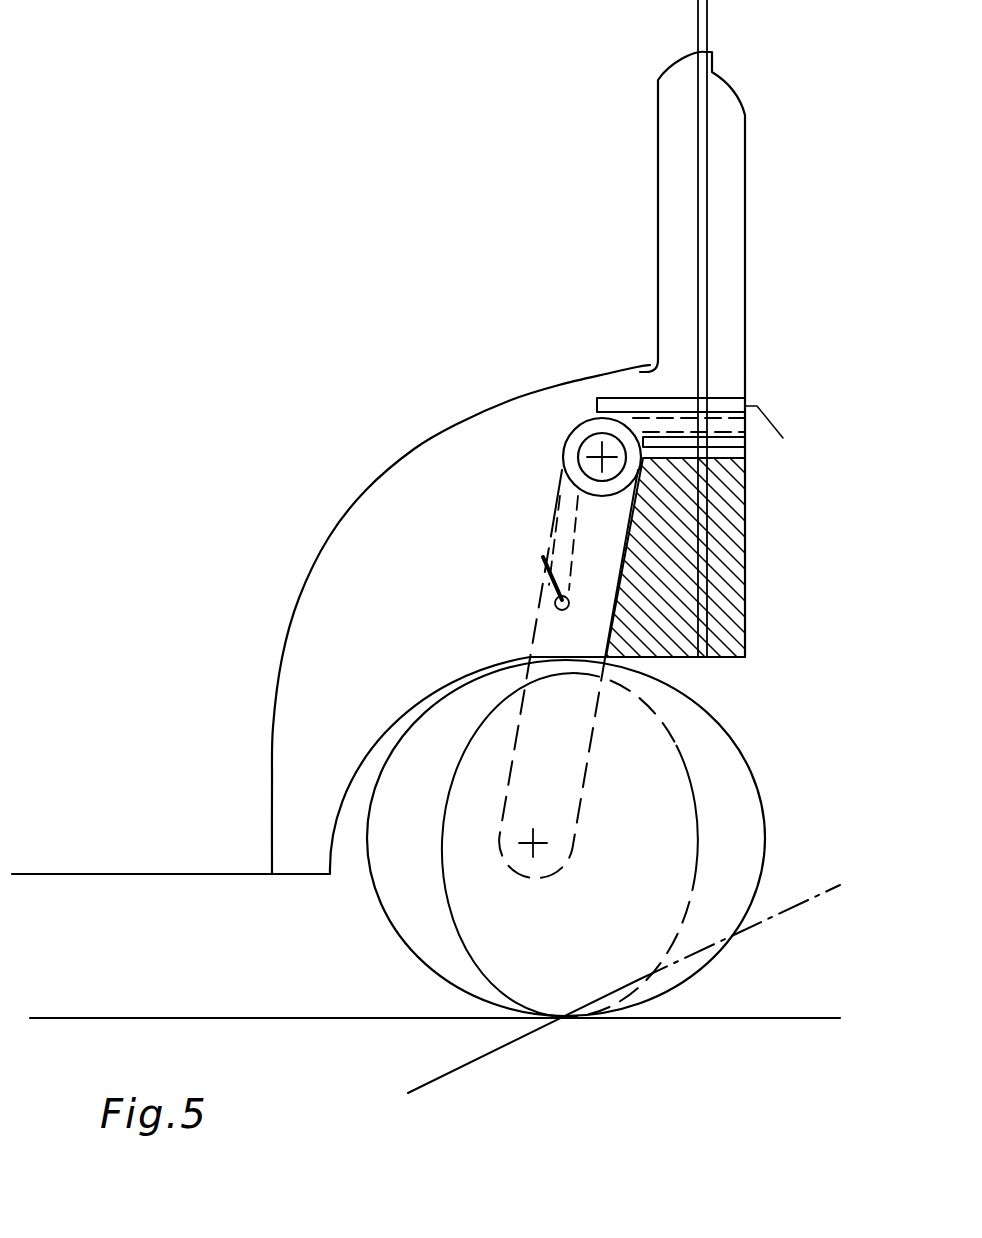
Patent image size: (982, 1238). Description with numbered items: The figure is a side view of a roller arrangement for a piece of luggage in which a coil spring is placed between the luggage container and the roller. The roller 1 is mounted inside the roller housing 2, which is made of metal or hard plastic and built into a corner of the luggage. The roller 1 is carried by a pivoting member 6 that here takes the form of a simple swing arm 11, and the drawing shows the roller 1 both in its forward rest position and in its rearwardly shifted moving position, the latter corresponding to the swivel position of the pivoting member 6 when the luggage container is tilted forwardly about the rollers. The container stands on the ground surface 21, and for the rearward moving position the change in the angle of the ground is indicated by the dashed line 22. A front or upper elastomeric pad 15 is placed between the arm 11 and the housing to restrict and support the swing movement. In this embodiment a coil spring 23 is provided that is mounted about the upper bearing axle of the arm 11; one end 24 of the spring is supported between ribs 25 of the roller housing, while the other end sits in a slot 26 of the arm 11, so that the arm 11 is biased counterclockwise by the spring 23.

The roller 1 is at (389, 919).
The roller housing 2 is at (300, 623).
The pivoting member 6 is at (527, 619).
The arm 11 is at (588, 763).
The elastomeric pad 15 is at (668, 548).
The ground surface 21 is at (153, 1016).
The dashed line 22 is at (475, 1062).
The coil spring 23 is at (578, 442).
The end 24 is at (710, 408).
The ribs 25 is at (728, 443).
The slot 26 is at (547, 552).